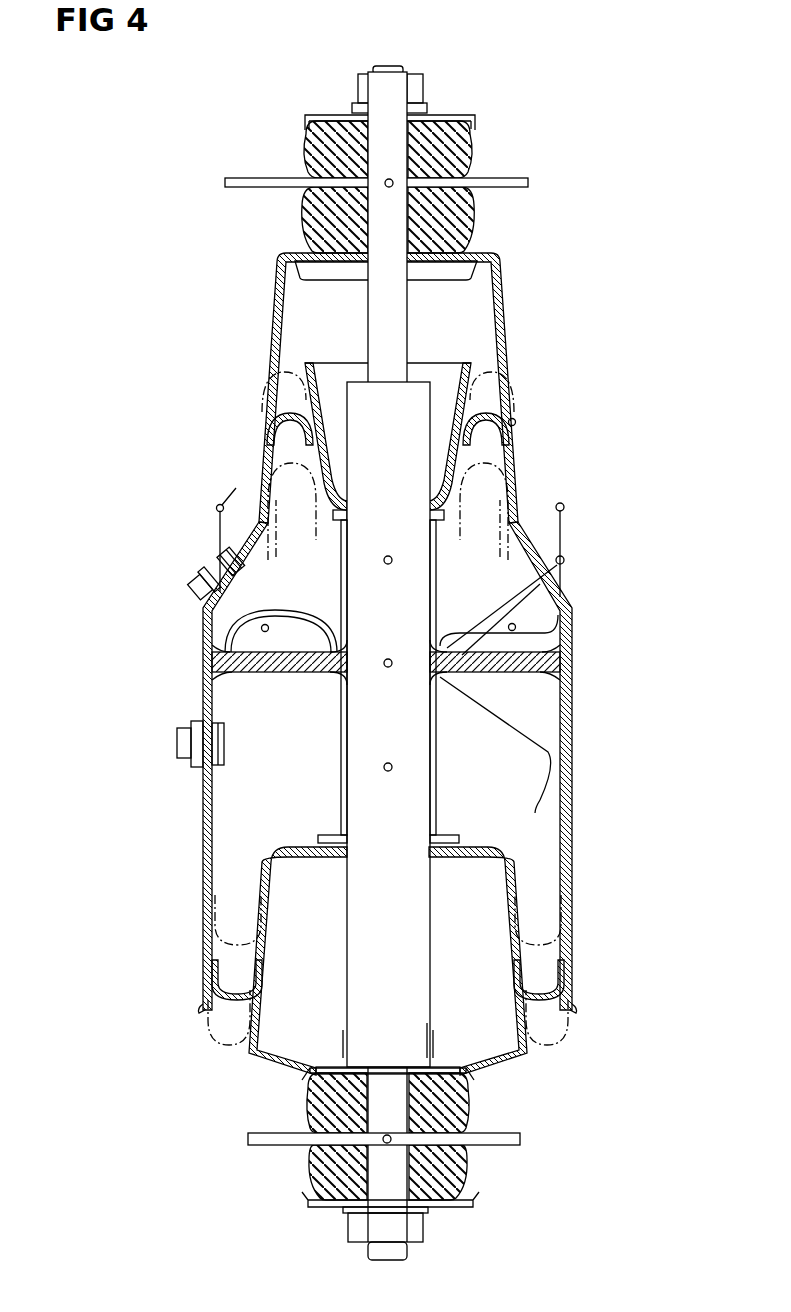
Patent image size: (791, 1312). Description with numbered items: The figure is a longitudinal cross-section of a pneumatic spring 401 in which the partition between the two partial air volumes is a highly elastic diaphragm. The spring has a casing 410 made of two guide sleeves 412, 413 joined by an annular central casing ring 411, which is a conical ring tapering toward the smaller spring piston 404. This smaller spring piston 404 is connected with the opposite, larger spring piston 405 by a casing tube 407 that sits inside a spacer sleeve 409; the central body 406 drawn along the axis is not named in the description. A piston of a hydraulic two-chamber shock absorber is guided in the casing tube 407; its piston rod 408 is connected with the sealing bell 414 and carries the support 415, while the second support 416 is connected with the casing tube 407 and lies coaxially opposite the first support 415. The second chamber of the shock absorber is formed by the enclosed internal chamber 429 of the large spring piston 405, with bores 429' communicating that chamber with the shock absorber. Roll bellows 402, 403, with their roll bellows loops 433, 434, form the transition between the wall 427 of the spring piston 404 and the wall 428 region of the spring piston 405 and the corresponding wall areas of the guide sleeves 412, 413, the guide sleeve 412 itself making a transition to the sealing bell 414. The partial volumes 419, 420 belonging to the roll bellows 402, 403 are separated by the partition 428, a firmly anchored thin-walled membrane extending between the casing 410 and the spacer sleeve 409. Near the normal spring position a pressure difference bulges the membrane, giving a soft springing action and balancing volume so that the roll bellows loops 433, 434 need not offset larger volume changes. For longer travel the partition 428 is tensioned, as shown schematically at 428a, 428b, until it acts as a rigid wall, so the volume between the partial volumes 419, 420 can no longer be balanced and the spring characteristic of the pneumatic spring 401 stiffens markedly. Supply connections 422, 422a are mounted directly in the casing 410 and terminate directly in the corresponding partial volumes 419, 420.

The pneumatic spring 401 is at (192, 788).
The roll bellows 402 is at (517, 460).
The roll bellows 403 is at (572, 855).
The spring piston 404 is at (318, 400).
The spring piston 405 is at (289, 903).
The central block 406 is at (364, 576).
The casing tube 407 is at (421, 567).
The piston rod 408 is at (396, 336).
The spacer sleeve 409 is at (436, 608).
The casing 410 is at (575, 720).
The annular central casing ring 411 is at (540, 545).
The guide sleeve 412 is at (516, 424).
The guide sleeve 413 is at (565, 916).
The sealing bell 414 is at (505, 262).
The support 415 is at (480, 128).
The second support 416 is at (480, 1118).
The partial volume 419 is at (540, 610).
The partial volume 420 is at (537, 813).
The supply connection 422 is at (215, 552).
The supply connection 422a is at (184, 730).
The wall 427 is at (297, 365).
The partition 428 is at (298, 673).
The tensioned partition position 428a is at (488, 713).
The tensioned partition position 428b is at (552, 634).
The internal chamber 429 is at (405, 935).
The bores 429' is at (455, 1025).
The roll bellows loop 433 is at (490, 372).
The roll bellows loop 434 is at (538, 992).